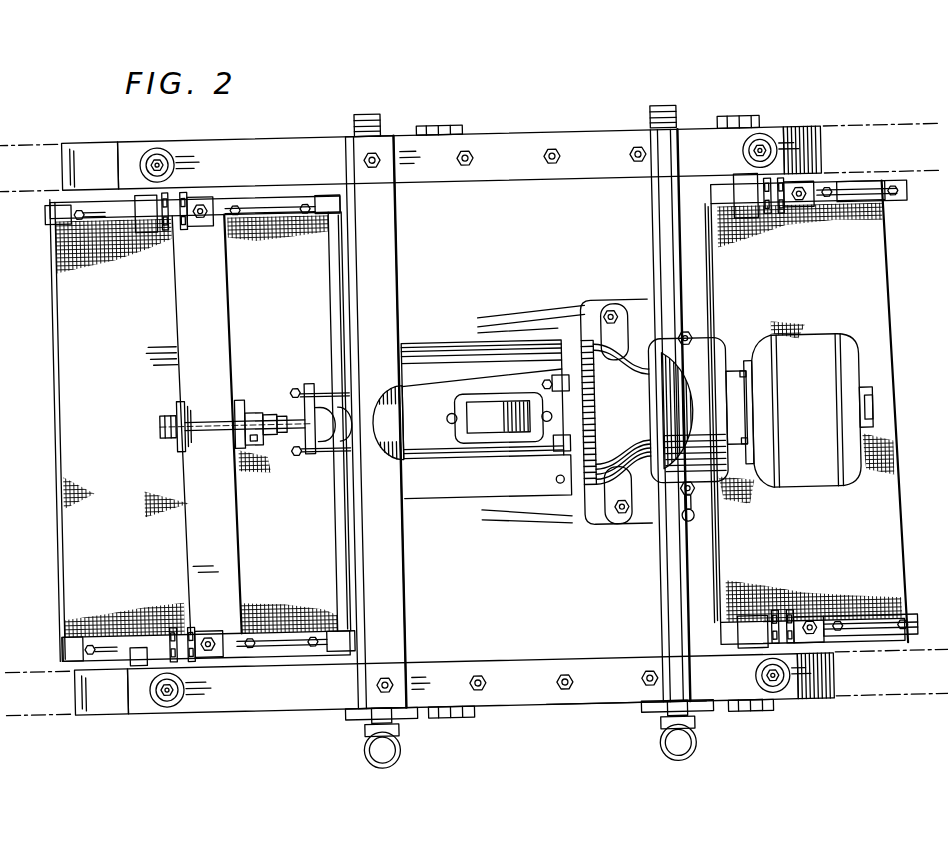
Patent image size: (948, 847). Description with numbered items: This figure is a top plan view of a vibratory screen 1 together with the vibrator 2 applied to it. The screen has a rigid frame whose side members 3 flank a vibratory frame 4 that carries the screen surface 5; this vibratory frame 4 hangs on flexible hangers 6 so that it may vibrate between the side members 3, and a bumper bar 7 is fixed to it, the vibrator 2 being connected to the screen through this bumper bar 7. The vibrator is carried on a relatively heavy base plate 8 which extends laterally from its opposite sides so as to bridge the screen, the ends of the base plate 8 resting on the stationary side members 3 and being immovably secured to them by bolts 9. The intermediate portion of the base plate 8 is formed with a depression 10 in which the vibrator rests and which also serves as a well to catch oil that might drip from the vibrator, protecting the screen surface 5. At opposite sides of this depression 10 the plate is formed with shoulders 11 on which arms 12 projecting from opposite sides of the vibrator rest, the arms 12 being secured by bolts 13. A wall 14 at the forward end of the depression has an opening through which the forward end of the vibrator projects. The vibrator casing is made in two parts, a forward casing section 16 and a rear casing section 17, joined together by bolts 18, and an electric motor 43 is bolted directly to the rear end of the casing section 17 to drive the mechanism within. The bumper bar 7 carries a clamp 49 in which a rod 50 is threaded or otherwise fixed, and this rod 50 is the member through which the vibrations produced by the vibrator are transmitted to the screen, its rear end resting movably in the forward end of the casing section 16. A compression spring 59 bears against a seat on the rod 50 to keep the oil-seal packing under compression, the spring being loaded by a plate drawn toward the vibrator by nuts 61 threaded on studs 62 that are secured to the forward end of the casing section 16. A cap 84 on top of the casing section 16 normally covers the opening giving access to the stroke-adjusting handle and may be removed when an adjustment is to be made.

The vibratory screen 1 is at (474, 430).
The vibrator 2 is at (560, 463).
The side members 3 is at (126, 142).
The vibratory frame 4 is at (66, 239).
The screen surface 5 is at (59, 262).
The flexible hangers 6 is at (185, 192).
The bumper bar 7 is at (194, 301).
The base plate 8 is at (608, 701).
The bolts 9 is at (553, 156).
The depression 10 is at (437, 342).
The shoulders 11 is at (652, 305).
The arms 12 is at (592, 305).
The bolts 13 is at (617, 314).
The wall 14 is at (400, 295).
The casing section 16 is at (410, 452).
The casing section 17 is at (651, 460).
The bolts 18 is at (565, 491).
The electric motor 43 is at (806, 480).
The clamp 49 is at (186, 406).
The rod 50 is at (297, 431).
The compression spring 59 is at (323, 440).
The nuts 61 is at (285, 490).
The studs 62 is at (312, 394).
The cap 84 is at (456, 406).